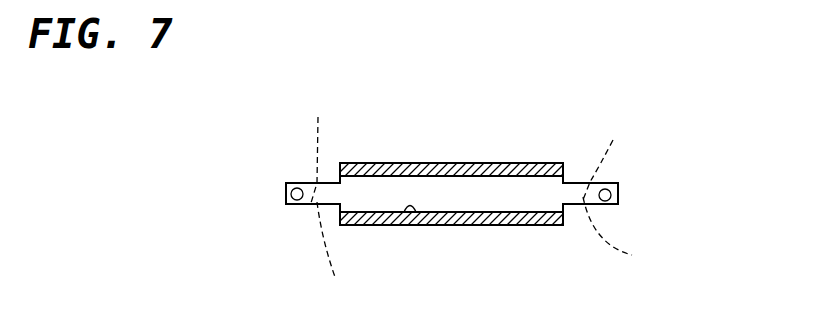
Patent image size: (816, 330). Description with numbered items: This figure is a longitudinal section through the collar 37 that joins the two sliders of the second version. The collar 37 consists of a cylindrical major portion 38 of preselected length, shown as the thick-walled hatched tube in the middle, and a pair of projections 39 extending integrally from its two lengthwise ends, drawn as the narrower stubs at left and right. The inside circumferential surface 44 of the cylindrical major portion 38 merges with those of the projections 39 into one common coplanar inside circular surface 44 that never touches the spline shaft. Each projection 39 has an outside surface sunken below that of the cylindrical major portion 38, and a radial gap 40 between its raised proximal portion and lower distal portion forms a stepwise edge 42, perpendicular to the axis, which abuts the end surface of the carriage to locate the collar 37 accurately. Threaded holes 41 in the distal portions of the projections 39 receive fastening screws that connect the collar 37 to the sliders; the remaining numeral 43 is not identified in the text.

The collar 37 is at (465, 162).
The cylindrical major portion 38 is at (502, 167).
The projections 39 is at (309, 204).
The radial gap 40 is at (469, 144).
The threaded holes 41 is at (291, 195).
The stepwise edge 42 is at (491, 252).
The roller sleeve 43 is at (405, 163).
The inside circumferential surface 44 is at (414, 212).